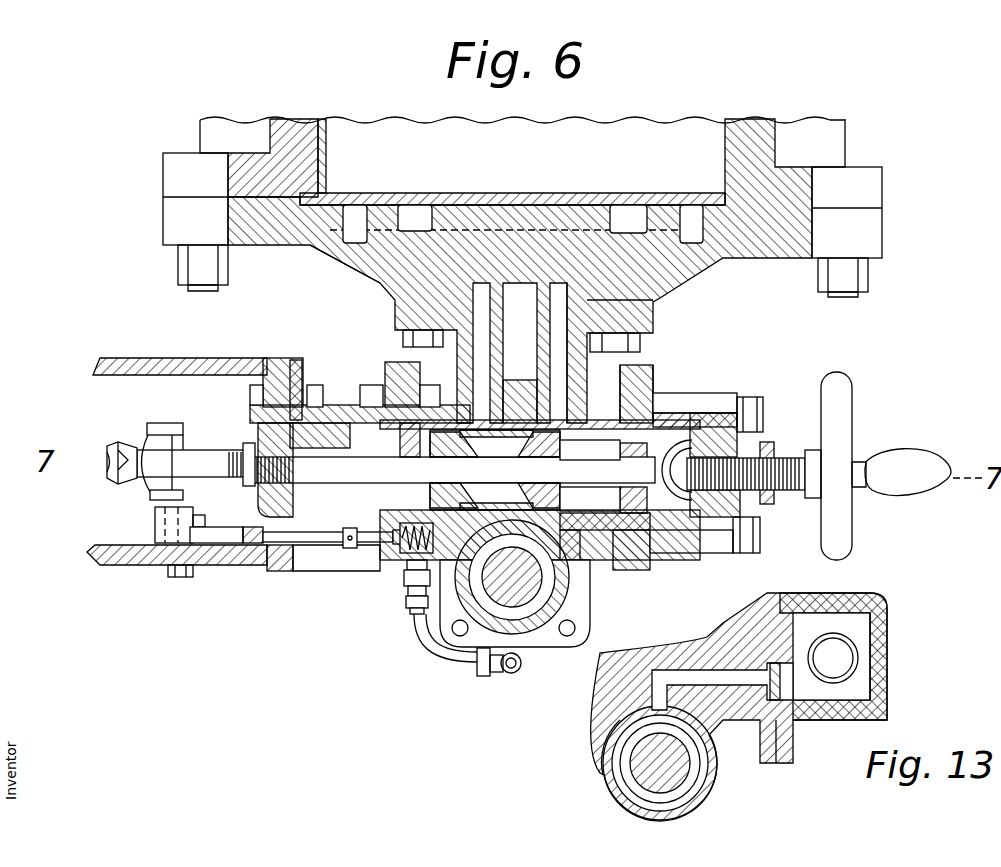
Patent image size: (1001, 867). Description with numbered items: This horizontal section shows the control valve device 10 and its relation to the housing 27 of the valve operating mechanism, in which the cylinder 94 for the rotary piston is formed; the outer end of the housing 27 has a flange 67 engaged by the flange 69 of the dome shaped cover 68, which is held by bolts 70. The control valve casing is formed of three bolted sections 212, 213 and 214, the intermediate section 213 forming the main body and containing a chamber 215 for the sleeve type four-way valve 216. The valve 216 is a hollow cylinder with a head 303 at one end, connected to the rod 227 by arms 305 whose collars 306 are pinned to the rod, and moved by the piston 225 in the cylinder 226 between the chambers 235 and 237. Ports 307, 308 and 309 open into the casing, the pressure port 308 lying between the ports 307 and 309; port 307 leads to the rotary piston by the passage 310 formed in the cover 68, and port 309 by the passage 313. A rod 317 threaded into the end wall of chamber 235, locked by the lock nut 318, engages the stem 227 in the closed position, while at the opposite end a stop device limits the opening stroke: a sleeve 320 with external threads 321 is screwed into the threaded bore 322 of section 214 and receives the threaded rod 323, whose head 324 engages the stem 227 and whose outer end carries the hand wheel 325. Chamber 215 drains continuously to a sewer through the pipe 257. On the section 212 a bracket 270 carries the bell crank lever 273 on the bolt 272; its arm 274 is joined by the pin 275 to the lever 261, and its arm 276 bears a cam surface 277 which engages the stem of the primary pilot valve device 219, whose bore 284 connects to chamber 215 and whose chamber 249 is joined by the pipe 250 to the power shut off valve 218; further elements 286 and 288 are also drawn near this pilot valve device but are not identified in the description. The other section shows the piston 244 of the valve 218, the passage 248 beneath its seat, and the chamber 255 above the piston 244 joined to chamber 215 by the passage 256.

In FIG. 6, the body 10 is at (522, 192).
In FIG. 6, the housing 27 is at (244, 128).
In FIG. 6, the cylinder 94 is at (323, 133).
In FIG. 6, the flange 67 is at (163, 173).
In FIG. 6, the flange 69 is at (163, 218).
In FIG. 6, the bolts 70 is at (178, 262).
In FIG. 6, the cover 68 is at (340, 253).
In FIG. 6, the intermediate section 213 is at (395, 305).
In FIG. 13, the intermediate section 213 is at (600, 698).
In FIG. 6, the port 309 is at (455, 324).
In FIG. 6, the passage 310 is at (352, 205).
In FIG. 6, the passage 313 is at (412, 208).
In FIG. 6, the port 307 is at (570, 323).
In FIG. 6, the pressure port 308 is at (560, 390).
In FIG. 6, the casing section 214 is at (637, 380).
In FIG. 13, the casing section 214 is at (880, 648).
In FIG. 6, the chamber 215 is at (627, 420).
In FIG. 13, the chamber 215 is at (848, 630).
In FIG. 6, the sleeve type four-way valve 216 is at (569, 447).
In FIG. 6, the rod 227 is at (450, 469).
In FIG. 6, the arms 305 is at (532, 445).
In FIG. 6, the collars 306 is at (532, 497).
In FIG. 6, the head 303 is at (569, 500).
In FIG. 6, the head 324 is at (673, 460).
In FIG. 6, the external threads 321 is at (720, 423).
In FIG. 6, the threaded bore 322 is at (770, 420).
In FIG. 6, the sleeve 320 is at (768, 445).
In FIG. 6, the threaded rod 323 is at (778, 484).
In FIG. 6, the hand wheel 325 is at (842, 404).
In FIG. 6, the pipe 257 is at (678, 482).
In FIG. 13, the pipe 257 is at (858, 668).
In FIG. 6, the bracket 270 is at (152, 358).
In FIG. 6, the piston 225 is at (300, 420).
In FIG. 6, the cylinder 226 is at (327, 400).
In FIG. 6, the chamber 237 is at (350, 423).
In FIG. 6, the chamber 235 is at (293, 430).
In FIG. 6, the lock nut 318 is at (247, 446).
In FIG. 6, the lever 261 is at (160, 425).
In FIG. 6, the rod 317 is at (135, 450).
In FIG. 6, the pin 275 is at (150, 500).
In FIG. 6, the arm 274 is at (155, 530).
In FIG. 6, the bell crank lever 273 is at (150, 552).
In FIG. 6, the bolt 272 is at (181, 577).
In FIG. 6, the arm 276 is at (225, 545).
In FIG. 6, the cam surface 277 is at (268, 571).
In FIG. 6, the casing section 212 is at (295, 571).
In FIG. 6, the rod 286 is at (257, 530).
In FIG. 6, the pin 288 is at (395, 535).
In FIG. 6, the primary pilot valve device 219 is at (403, 530).
In FIG. 6, the bore 284 is at (410, 548).
In FIG. 6, the chamber 249 is at (402, 572).
In FIG. 6, the pipe 250 is at (423, 642).
In FIG. 6, the power shut off valve 218 is at (532, 573).
In FIG. 13, the power shut off valve 218 is at (640, 770).
In FIG. 6, the passage 248 is at (540, 593).
In FIG. 13, the passage 256 is at (700, 670).
In FIG. 13, the chamber 255 is at (610, 757).
In FIG. 13, the piston 244 is at (700, 775).